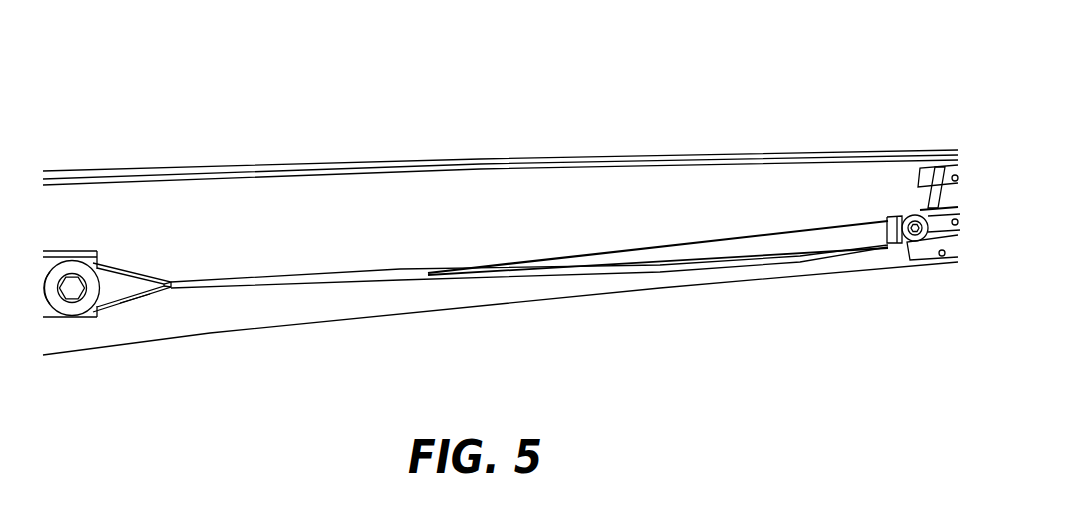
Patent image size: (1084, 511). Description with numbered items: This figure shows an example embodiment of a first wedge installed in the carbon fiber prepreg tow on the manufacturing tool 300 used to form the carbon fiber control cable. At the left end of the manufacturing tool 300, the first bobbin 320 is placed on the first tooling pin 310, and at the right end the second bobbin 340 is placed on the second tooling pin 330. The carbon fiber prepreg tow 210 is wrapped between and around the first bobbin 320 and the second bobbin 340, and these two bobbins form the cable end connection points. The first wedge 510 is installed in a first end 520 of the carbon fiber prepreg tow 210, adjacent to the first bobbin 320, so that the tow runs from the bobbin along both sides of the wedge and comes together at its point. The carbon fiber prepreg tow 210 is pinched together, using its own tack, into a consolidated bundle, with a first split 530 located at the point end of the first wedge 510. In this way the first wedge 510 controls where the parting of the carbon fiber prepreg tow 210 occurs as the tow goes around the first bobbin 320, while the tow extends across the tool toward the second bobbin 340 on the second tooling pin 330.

The manufacturing tool 300 is at (560, 116).
The first tooling pin 310 is at (72, 300).
The first bobbin 320 is at (72, 276).
The first wedge 510 is at (115, 287).
The first end 520 is at (149, 296).
The first split 530 is at (172, 283).
The carbon fiber prepreg tow 210 is at (682, 265).
The second tooling pin 330 is at (916, 243).
The second bobbin 340 is at (915, 216).